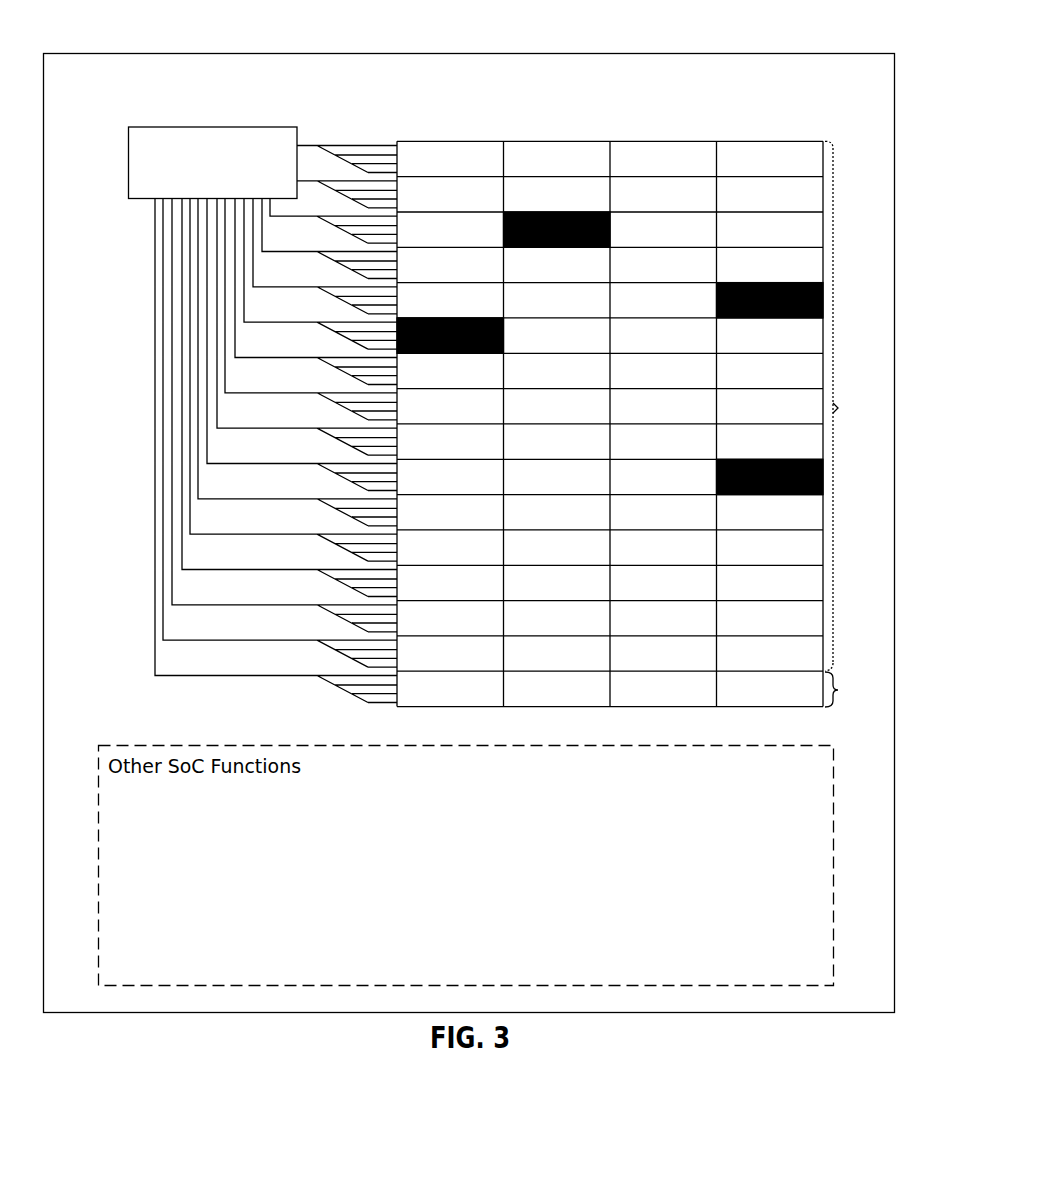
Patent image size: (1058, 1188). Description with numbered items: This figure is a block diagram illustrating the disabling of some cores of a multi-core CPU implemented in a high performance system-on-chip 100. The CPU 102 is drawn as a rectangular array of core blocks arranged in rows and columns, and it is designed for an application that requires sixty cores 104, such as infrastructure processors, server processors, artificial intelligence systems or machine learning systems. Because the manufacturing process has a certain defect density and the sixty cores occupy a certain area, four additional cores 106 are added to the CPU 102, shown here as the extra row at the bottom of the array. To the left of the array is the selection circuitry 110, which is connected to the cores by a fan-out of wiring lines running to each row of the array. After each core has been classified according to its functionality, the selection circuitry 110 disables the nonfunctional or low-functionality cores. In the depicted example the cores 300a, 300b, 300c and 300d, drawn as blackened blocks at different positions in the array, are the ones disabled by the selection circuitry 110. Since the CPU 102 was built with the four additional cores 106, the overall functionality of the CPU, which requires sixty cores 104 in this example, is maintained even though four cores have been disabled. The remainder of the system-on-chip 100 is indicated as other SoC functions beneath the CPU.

The high performance system-on-chip 100 is at (108, 52).
The selection circuitry 110 is at (193, 126).
The CPU 102 is at (461, 140).
The cores 104 is at (852, 406).
The additional cores 106 is at (852, 689).
The core 300a is at (573, 212).
The core 300b is at (425, 354).
The core 300c is at (823, 467).
The core 300d is at (718, 304).